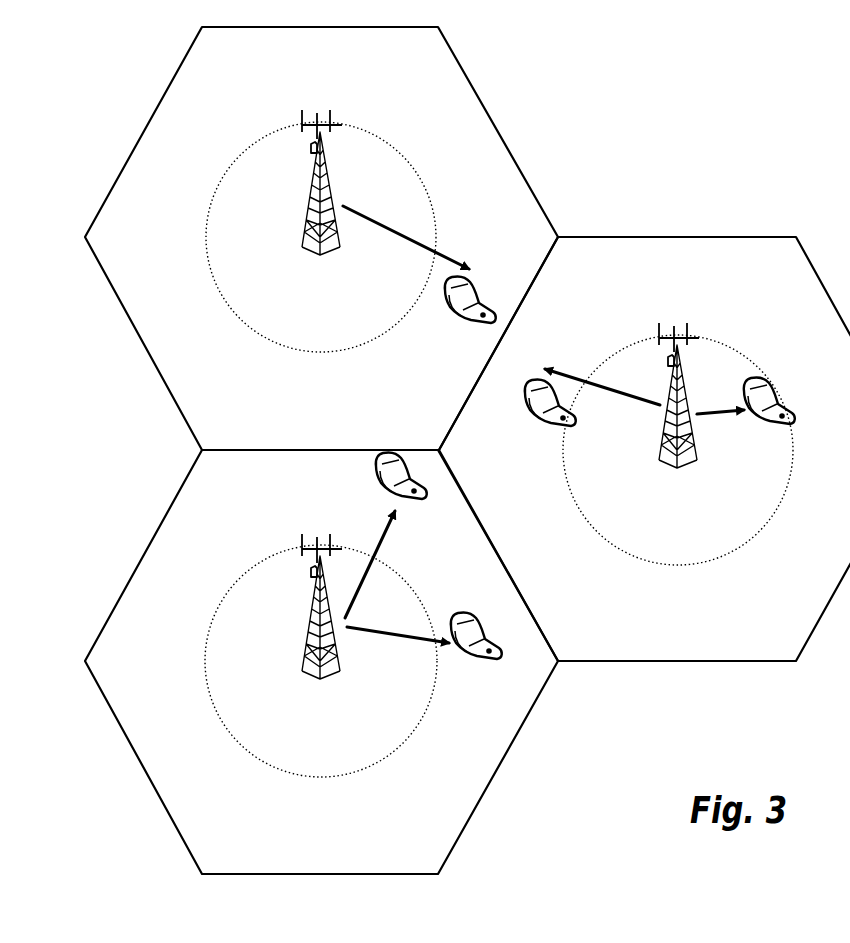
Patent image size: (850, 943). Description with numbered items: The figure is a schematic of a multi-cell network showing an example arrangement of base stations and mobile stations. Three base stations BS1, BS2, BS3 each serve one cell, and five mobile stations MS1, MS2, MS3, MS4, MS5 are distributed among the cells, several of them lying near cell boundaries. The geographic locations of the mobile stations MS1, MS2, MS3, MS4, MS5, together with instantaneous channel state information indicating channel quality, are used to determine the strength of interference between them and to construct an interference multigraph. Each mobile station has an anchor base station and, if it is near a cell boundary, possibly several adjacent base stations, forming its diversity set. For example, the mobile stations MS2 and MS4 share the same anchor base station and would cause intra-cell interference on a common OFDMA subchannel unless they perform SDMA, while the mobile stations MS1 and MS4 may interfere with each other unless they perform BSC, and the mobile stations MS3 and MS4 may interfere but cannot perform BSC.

The base station BS1 is at (332, 205).
The base station BS2 is at (332, 631).
The base station BS3 is at (684, 419).
The mobile station MS1 is at (488, 269).
The mobile station MS2 is at (784, 431).
The mobile station MS3 is at (492, 667).
The mobile station MS4 is at (529, 416).
The mobile station MS5 is at (400, 454).